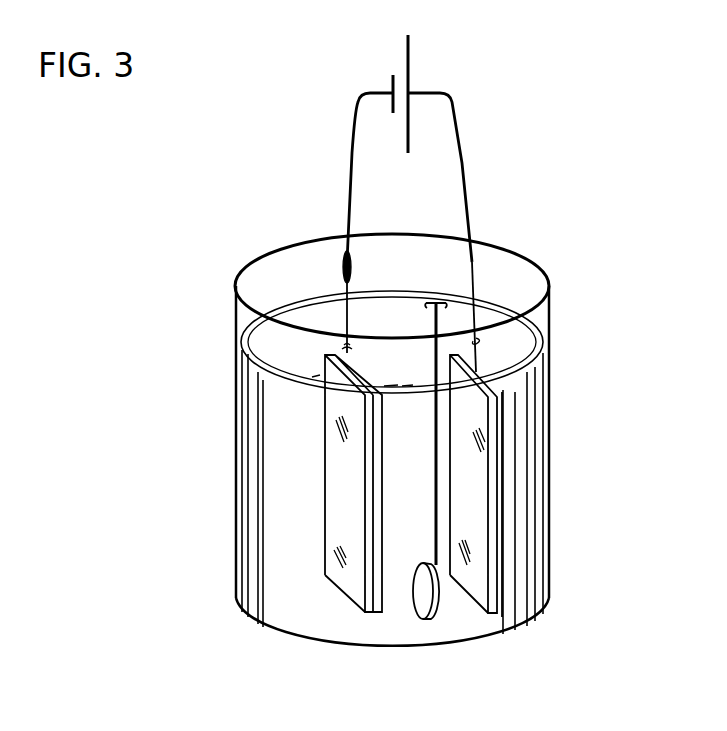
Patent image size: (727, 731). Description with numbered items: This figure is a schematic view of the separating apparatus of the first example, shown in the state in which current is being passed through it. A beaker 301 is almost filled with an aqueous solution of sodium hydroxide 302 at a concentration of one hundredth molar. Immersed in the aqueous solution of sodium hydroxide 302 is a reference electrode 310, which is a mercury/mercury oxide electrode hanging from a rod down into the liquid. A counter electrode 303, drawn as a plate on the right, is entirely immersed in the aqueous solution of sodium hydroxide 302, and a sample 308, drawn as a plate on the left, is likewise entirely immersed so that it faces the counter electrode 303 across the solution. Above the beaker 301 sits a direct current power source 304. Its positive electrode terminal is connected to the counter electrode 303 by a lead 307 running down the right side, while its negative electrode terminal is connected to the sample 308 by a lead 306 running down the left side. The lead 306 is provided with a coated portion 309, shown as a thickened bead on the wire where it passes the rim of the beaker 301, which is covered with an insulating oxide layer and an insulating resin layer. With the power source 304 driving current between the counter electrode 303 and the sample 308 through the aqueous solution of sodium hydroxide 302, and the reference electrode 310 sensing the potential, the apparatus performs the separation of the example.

The beaker 301 is at (512, 282).
The aqueous solution of sodium hydroxide 302 is at (527, 450).
The counter electrode 303 is at (482, 592).
The direct current power source 304 is at (402, 70).
The lead 306 is at (352, 148).
The lead 307 is at (465, 166).
The sample 308 is at (350, 592).
The coated portion 309 is at (340, 258).
The reference electrode 310 is at (420, 608).